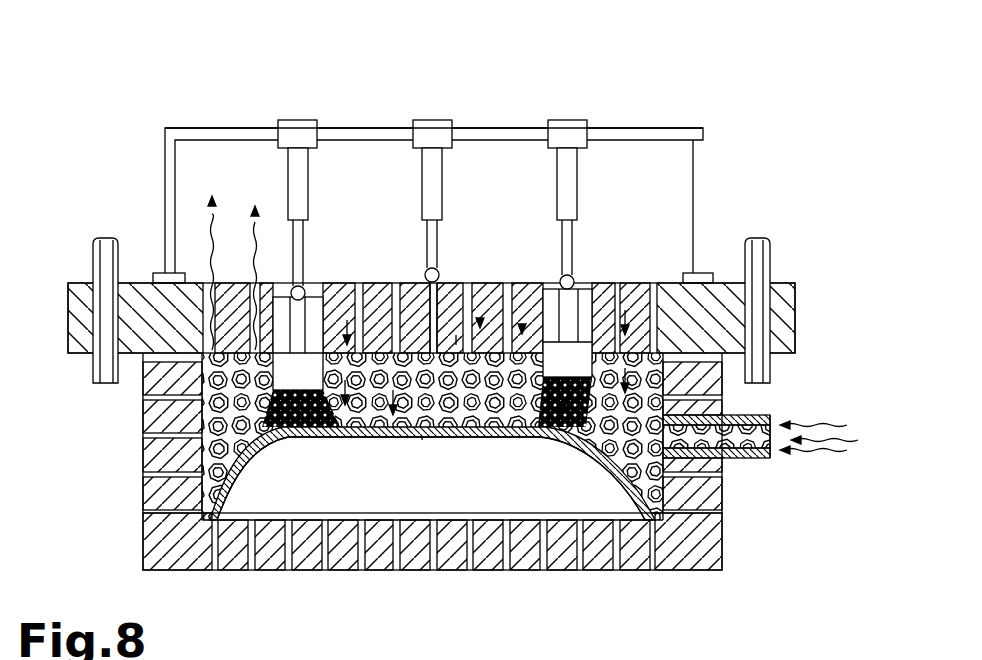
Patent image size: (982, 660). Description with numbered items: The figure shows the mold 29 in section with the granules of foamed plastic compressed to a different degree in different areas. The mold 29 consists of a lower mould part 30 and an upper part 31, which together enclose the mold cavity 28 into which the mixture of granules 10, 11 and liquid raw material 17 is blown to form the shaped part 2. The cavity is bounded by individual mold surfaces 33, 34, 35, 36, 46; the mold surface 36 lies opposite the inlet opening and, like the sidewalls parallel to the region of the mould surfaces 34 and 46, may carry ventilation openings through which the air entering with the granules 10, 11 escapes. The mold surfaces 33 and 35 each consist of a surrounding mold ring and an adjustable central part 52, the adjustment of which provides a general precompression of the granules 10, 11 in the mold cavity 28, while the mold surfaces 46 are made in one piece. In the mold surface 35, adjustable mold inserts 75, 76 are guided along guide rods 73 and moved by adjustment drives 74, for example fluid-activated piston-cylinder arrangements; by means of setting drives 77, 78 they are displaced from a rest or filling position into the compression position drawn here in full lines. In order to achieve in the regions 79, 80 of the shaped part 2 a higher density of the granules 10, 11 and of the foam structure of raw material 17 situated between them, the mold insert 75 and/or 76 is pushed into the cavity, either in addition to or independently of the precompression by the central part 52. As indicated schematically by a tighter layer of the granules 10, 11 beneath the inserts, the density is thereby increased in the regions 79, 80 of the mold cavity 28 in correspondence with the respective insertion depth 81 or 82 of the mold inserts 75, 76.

The shaped part 2 is at (432, 528).
The granules 10 is at (250, 453).
The granules 11 is at (455, 400).
The liquid raw material 17 is at (506, 438).
The mold cavity 28 is at (410, 352).
The mold 29 is at (139, 140).
The lower mould part 30 is at (163, 535).
The upper part 31 is at (682, 315).
The mold surface 33 is at (422, 437).
The mold surface 34 is at (202, 448).
The mold surface 35 is at (456, 345).
The mold surface 36 is at (700, 408).
The mold surface 46 is at (484, 432).
The central part 52 is at (480, 318).
The guide rods 73 is at (110, 267).
The adjustment drives 74 is at (332, 165).
The mold insert 75 is at (300, 373).
The mold insert 76 is at (573, 360).
The setting drive 77 is at (295, 185).
The setting drive 78 is at (568, 190).
The region 79 is at (267, 320).
The region 80 is at (522, 324).
The insertion depth 81 is at (360, 405).
The insertion depth 82 is at (597, 438).